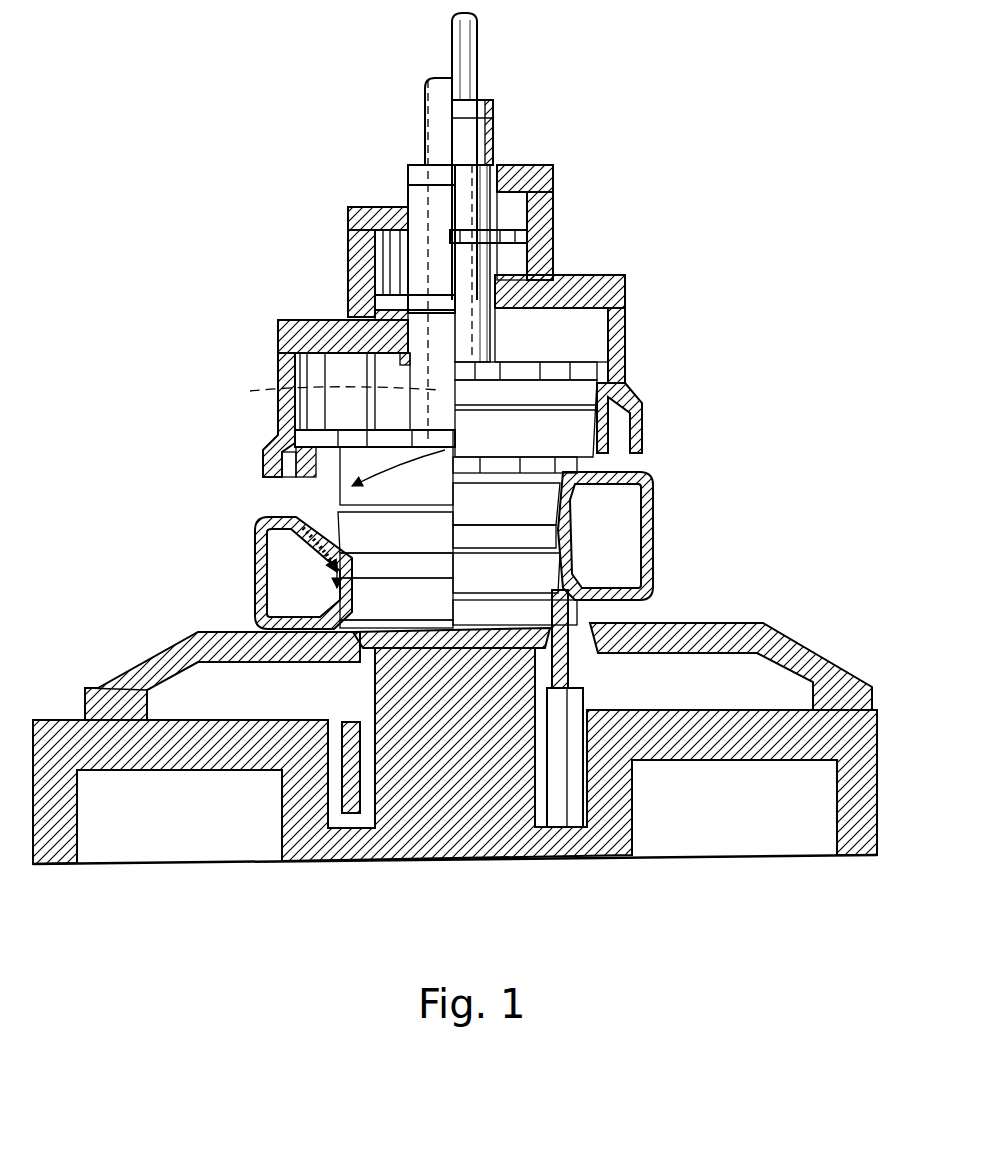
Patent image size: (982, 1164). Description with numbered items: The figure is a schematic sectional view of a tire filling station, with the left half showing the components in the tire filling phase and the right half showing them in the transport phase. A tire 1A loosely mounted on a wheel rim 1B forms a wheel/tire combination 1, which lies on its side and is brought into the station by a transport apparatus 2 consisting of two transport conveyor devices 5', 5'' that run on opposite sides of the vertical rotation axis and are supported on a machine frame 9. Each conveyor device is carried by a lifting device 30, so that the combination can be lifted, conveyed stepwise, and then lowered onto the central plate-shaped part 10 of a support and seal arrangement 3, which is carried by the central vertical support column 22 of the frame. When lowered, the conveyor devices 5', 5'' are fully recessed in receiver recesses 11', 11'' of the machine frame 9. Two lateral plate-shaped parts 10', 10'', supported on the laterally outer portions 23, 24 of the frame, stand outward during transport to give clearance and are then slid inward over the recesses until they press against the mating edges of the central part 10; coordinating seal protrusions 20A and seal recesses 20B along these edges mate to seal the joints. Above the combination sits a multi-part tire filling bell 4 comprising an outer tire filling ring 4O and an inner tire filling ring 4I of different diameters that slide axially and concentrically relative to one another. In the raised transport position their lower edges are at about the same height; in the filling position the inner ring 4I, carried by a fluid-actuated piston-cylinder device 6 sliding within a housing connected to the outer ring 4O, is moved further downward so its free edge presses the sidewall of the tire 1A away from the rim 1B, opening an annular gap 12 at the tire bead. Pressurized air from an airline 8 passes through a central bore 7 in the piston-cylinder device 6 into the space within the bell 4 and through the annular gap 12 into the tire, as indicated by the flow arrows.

The wheel/tire combination 1 is at (454, 550).
The tire 1A is at (255, 570).
The wheel rim 1B is at (535, 538).
The transport apparatus 2 is at (578, 616).
The support and seal arrangement 3 is at (160, 645).
The tire filling bell 4 is at (490, 321).
The second tire filling ring 4O is at (627, 335).
The first tire filling ring 4I is at (642, 430).
The transport conveyor device 5' is at (366, 827).
The transport conveyor device 5'' is at (607, 757).
The piston-cylinder device 6 is at (482, 268).
The central bore 7 is at (250, 391).
The airline 8 is at (460, 58).
The machine frame 9 is at (602, 832).
The central plate-shaped part 10 is at (443, 790).
The lateral plate-shaped part 10' is at (116, 669).
The lateral plate-shaped part 10'' is at (734, 660).
The receiver recess 11' is at (327, 826).
The receiver recess 11'' is at (557, 790).
The annular gap 12 is at (262, 522).
The seal protrusion 20A is at (598, 632).
The seal recess 20B is at (598, 660).
The central vertical support column 22 is at (456, 818).
The laterally outer portion of machine frame 23 is at (176, 850).
The laterally outer portion of machine frame 24 is at (718, 750).
The lifting device 30 is at (565, 830).